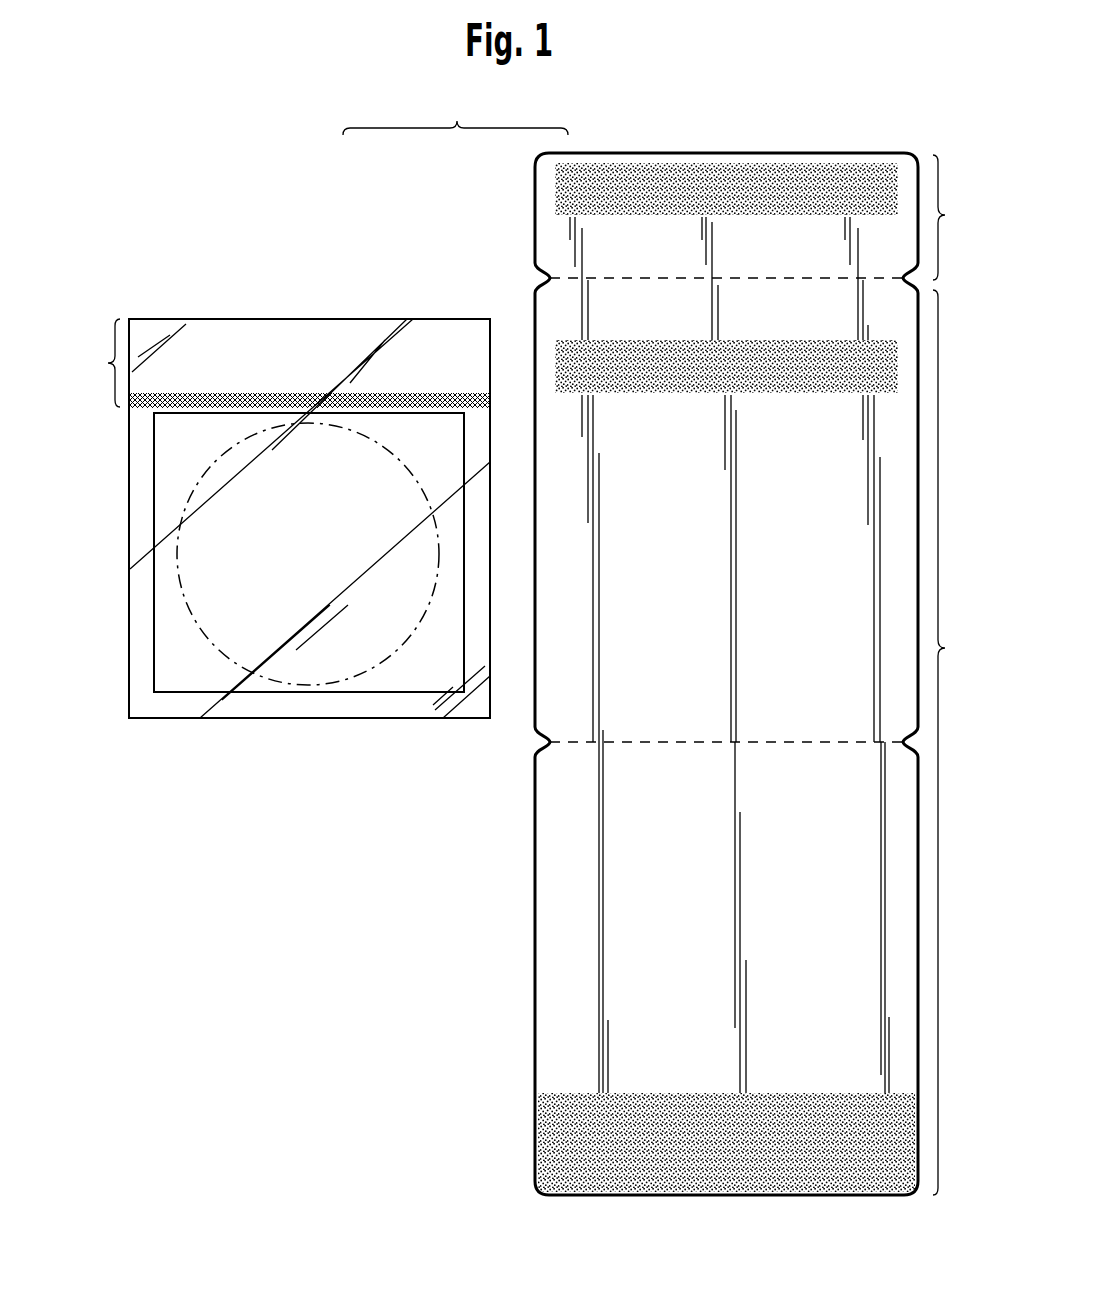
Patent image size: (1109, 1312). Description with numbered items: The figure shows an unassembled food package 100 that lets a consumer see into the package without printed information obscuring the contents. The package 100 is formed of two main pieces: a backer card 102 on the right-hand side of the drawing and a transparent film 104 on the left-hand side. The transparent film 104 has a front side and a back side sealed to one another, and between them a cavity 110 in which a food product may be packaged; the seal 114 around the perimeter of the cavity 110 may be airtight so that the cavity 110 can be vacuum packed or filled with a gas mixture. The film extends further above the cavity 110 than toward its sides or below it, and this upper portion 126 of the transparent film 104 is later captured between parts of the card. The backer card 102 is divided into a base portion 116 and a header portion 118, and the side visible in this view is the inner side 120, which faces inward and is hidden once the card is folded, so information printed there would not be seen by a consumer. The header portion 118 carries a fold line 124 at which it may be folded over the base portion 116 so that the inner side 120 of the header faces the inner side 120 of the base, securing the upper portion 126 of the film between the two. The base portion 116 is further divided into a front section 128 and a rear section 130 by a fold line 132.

The food package 100 is at (266, 214).
The backer card 102 is at (745, 154).
The transparent film 104 is at (215, 318).
The cavity 110 is at (228, 643).
The seal 114 is at (376, 707).
The base portion 116 is at (945, 648).
The header portion 118 is at (945, 215).
The inner side 120 is at (843, 634).
The fold line 124 is at (570, 277).
The upper portion 126 is at (108, 363).
The front section 128 is at (700, 1037).
The rear section 130 is at (661, 634).
The fold line 132 is at (587, 743).